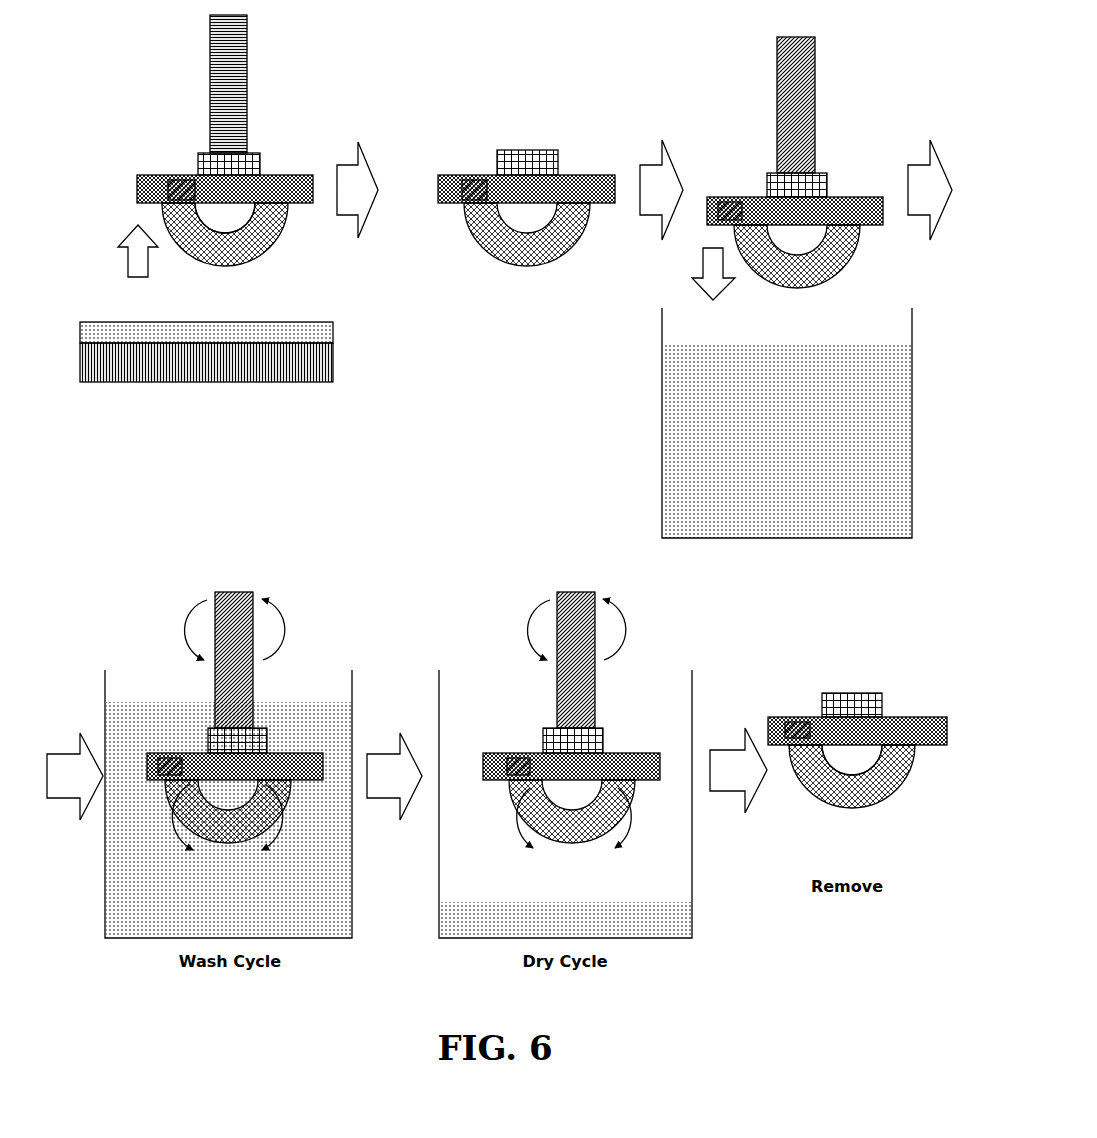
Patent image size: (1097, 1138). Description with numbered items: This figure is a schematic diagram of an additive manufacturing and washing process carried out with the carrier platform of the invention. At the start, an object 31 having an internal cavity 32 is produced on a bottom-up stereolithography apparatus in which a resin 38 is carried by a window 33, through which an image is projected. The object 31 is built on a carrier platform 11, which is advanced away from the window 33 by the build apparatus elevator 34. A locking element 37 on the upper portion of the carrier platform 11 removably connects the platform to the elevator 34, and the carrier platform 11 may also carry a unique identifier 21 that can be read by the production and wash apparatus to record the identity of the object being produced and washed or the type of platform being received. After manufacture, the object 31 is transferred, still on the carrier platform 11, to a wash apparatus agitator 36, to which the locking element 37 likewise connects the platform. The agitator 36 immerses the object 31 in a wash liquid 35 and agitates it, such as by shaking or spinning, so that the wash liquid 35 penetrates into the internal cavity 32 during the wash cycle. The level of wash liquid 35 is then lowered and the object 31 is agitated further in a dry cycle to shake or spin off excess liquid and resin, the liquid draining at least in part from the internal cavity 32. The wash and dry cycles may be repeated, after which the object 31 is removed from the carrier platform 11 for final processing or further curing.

The carrier platform 11 is at (913, 727).
The unique identifier 21 is at (798, 725).
The object 31 is at (538, 523).
The internal cavity 32 is at (234, 216).
The window 33 is at (171, 362).
The build apparatus elevator 34 is at (248, 107).
The wash liquid 35 is at (509, 622).
The wash apparatus agitator 36 is at (782, 152).
The locking element 37 is at (208, 165).
The resin 38 is at (333, 336).